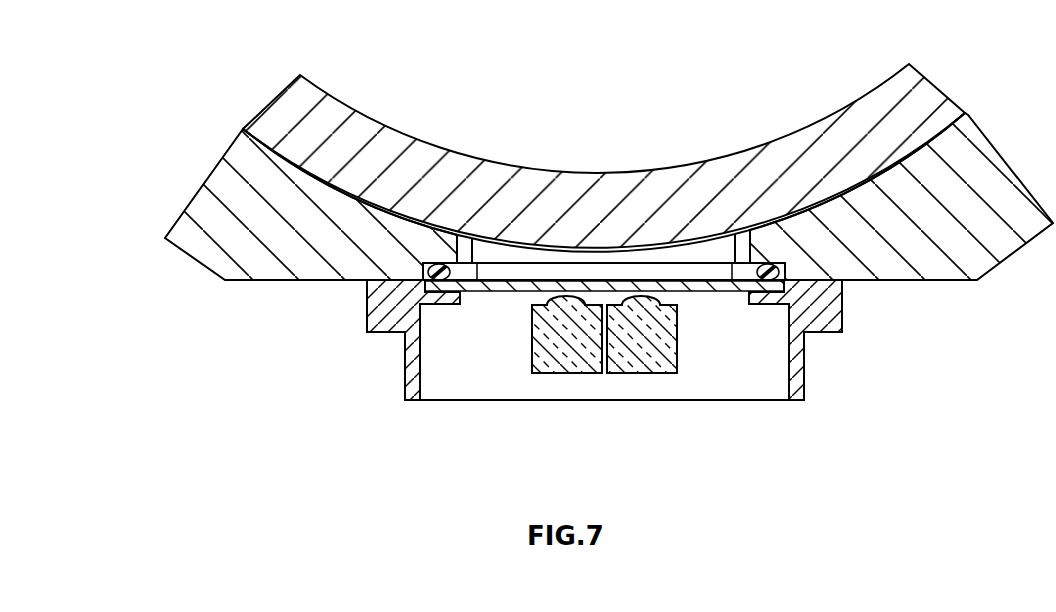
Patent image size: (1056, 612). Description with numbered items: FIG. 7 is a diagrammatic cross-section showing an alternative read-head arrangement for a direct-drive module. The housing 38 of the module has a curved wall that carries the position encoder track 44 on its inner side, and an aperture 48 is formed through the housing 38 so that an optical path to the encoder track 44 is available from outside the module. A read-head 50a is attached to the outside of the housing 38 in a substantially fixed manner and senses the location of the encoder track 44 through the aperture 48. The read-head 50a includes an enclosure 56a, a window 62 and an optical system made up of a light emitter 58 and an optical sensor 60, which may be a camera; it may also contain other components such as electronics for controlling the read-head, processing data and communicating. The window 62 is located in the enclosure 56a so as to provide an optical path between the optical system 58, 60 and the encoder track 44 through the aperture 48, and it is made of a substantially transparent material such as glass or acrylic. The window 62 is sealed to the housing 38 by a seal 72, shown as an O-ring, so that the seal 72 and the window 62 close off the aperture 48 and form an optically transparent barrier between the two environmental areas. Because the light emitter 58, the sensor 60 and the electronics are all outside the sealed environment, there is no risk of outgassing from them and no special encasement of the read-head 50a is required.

The housing 38 is at (237, 258).
The position encoder track 44 is at (611, 198).
The aperture 48 is at (503, 253).
The seal 72 is at (772, 267).
The enclosure 56a is at (843, 305).
The window 62 is at (725, 283).
The optical sensor 60 is at (572, 360).
The light emitter 58 is at (643, 363).
The read-head 50a is at (403, 367).